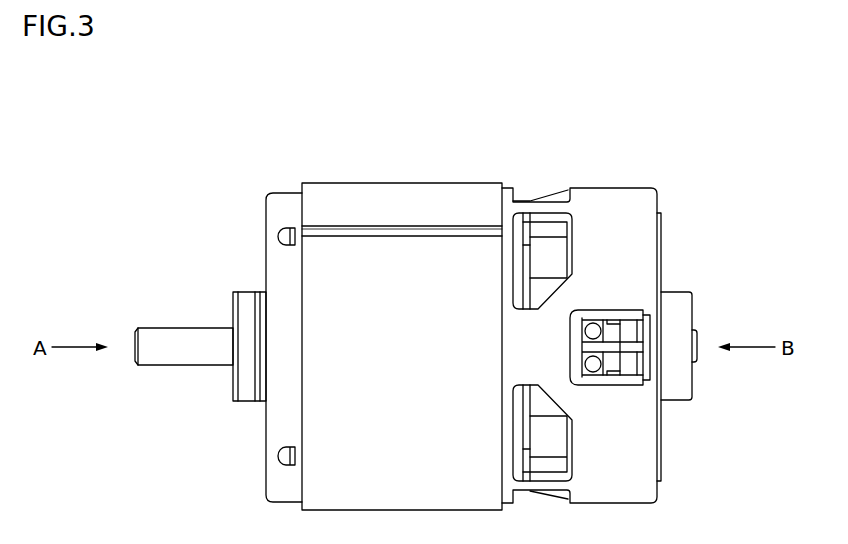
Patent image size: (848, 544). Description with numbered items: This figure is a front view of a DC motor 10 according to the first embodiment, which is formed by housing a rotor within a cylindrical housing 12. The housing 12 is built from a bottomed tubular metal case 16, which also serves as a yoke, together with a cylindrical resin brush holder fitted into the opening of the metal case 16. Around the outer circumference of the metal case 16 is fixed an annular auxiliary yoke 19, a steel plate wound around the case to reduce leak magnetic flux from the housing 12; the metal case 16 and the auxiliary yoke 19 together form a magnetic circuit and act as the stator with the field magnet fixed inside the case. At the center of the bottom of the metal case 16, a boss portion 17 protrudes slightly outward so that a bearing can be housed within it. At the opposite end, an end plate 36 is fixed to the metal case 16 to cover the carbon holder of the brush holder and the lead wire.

The DC motor 10 is at (523, 143).
The housing 12 is at (624, 180).
The metal case 16 is at (283, 192).
The boss portion 17 is at (240, 291).
The auxiliary yoke 19 is at (401, 182).
The end plate 36 is at (686, 402).